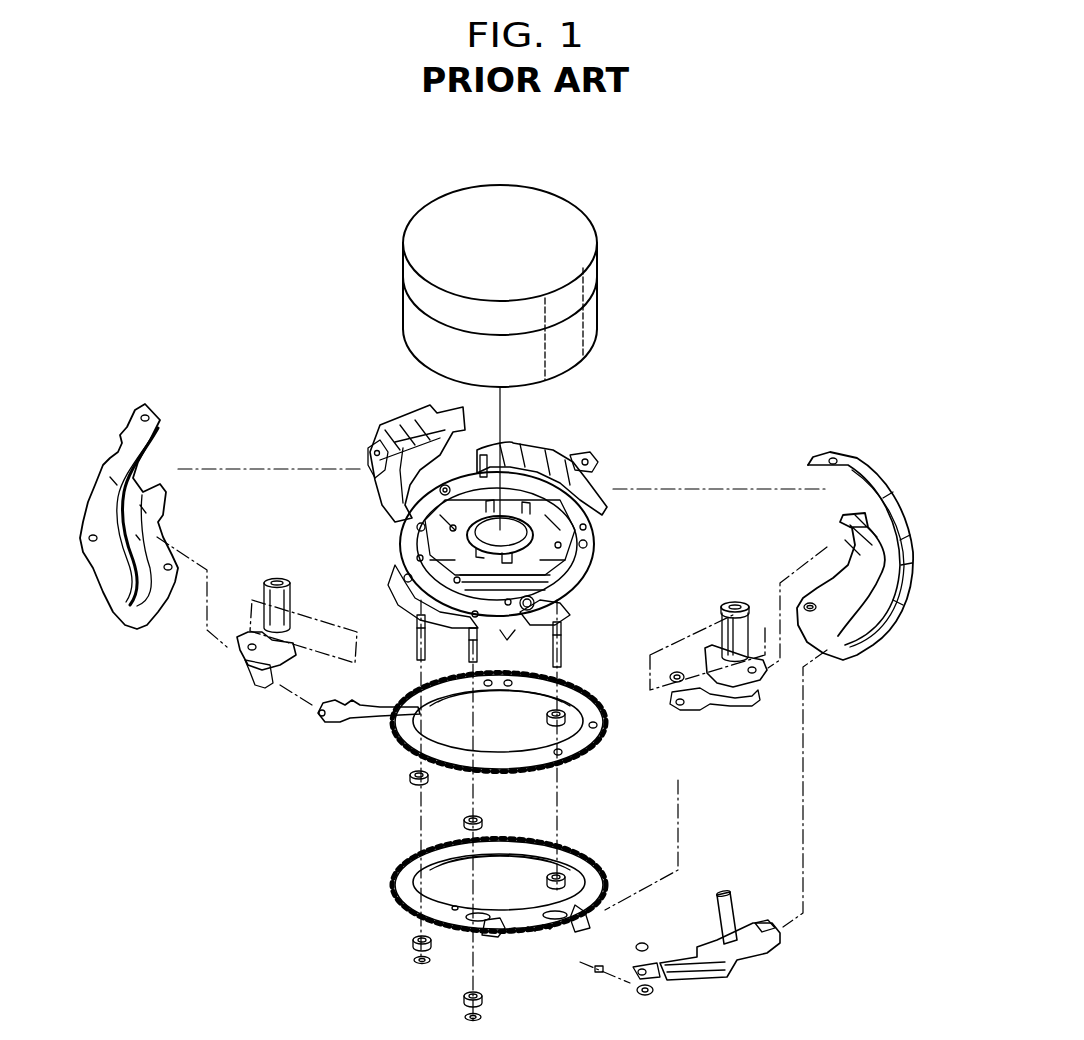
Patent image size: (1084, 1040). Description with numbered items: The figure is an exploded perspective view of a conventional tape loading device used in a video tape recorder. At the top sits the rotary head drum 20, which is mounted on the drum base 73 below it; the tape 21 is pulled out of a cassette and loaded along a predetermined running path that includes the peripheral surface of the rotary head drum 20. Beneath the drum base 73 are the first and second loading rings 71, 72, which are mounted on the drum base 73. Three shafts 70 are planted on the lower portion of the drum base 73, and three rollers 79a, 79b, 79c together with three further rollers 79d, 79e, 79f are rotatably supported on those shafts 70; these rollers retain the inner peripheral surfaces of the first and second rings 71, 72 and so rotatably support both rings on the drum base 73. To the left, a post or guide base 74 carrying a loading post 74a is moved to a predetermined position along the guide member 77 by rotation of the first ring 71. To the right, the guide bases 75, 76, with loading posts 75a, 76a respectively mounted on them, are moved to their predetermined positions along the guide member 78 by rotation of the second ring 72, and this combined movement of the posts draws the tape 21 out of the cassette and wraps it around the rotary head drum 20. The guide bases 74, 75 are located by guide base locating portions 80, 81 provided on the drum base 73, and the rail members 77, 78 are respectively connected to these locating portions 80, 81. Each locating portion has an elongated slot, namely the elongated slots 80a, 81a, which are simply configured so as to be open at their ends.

The rotary head drum 20 is at (600, 270).
The tape 21 is at (338, 623).
The shafts 70 is at (418, 632).
The first loading ring 71 is at (395, 738).
The second loading ring 72 is at (385, 883).
The drum base 73 is at (598, 548).
The guide base 74 is at (240, 663).
The loading post 74a is at (280, 582).
The guide base 75 is at (733, 700).
The loading post 75a is at (736, 606).
The guide base 76 is at (752, 960).
The loading post 76a is at (735, 897).
The guide member 77 is at (130, 625).
The guide member 78 is at (872, 650).
The roller 79a is at (408, 780).
The roller 79b is at (480, 820).
The roller 79c is at (568, 725).
The roller 79d is at (418, 940).
The roller 79e is at (490, 1000).
The roller 79f is at (575, 875).
The guide base locating portion 80 is at (420, 425).
The elongated slot 80a is at (383, 428).
The guide base locating portion 81 is at (540, 455).
The elongated slot 81a is at (585, 470).